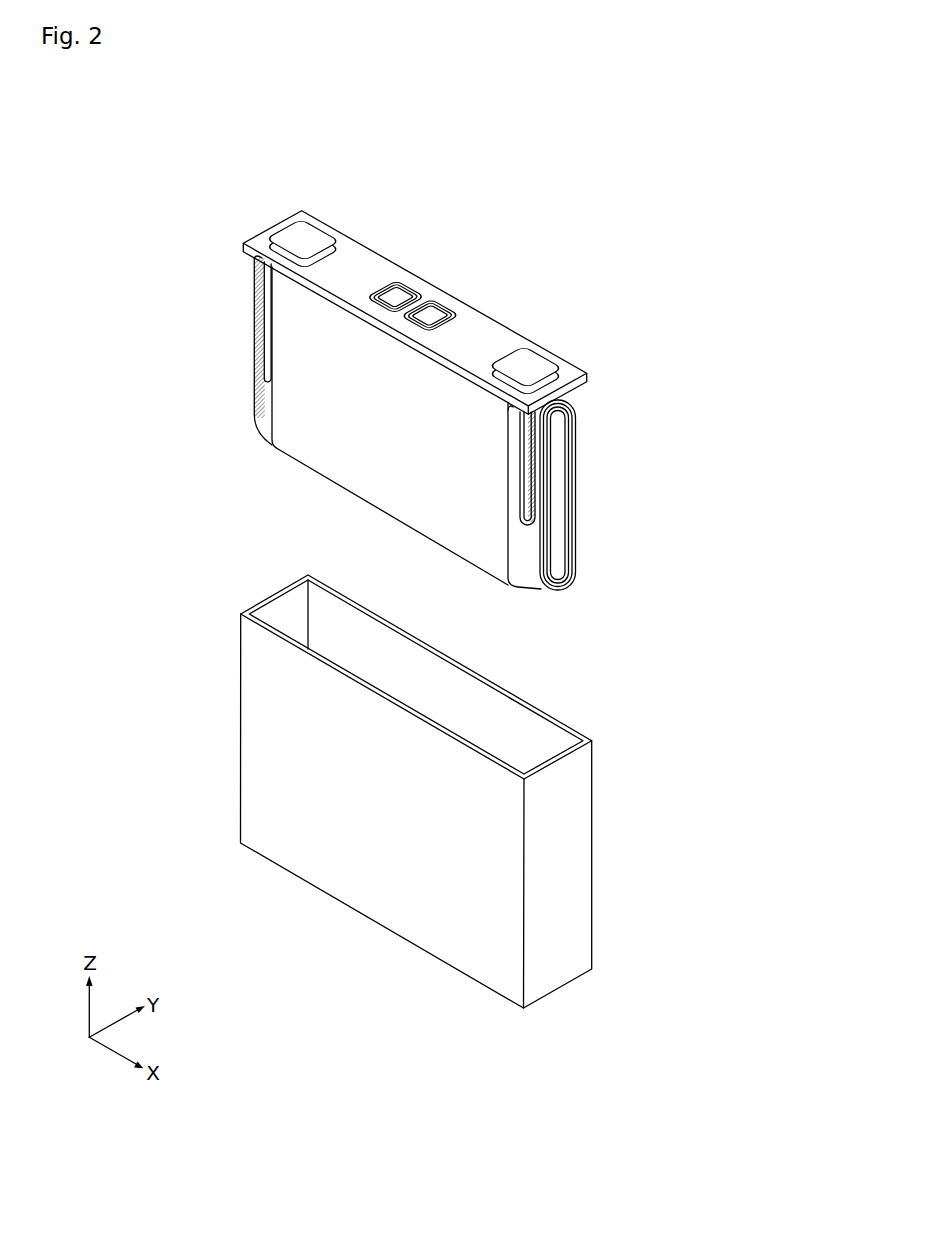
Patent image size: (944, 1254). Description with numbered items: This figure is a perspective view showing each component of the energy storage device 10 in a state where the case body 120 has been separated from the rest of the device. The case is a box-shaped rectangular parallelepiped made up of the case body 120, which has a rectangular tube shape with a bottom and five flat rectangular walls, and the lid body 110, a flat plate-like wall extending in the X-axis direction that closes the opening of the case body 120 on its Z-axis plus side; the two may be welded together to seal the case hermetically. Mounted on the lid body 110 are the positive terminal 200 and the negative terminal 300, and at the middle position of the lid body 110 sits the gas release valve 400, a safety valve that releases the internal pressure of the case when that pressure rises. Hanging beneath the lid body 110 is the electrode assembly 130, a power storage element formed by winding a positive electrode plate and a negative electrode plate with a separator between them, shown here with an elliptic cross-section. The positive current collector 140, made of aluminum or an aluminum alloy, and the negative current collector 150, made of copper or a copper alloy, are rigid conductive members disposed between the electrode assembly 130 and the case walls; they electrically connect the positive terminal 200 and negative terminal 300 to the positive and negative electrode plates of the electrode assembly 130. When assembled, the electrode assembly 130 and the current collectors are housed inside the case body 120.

The energy storage device 10 is at (600, 158).
The lid body 110 is at (478, 320).
The case body 120 is at (580, 848).
The electrode assembly 130 is at (412, 436).
The positive current collector 140 is at (262, 317).
The negative current collector 150 is at (527, 470).
The positive terminal 200 is at (308, 233).
The negative terminal 300 is at (532, 365).
The gas release valve 400 is at (410, 288).